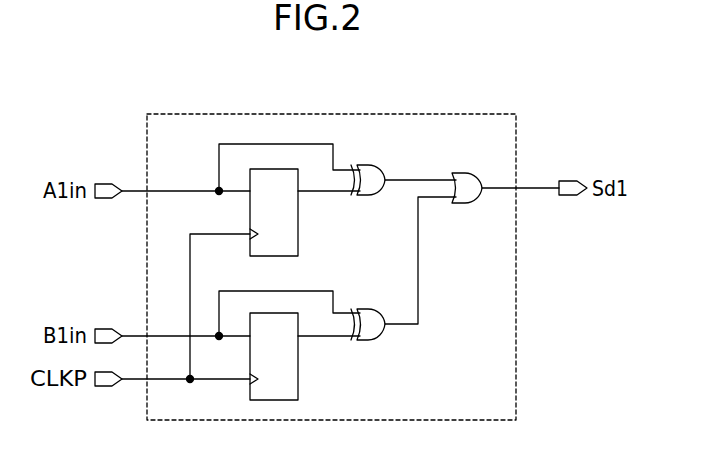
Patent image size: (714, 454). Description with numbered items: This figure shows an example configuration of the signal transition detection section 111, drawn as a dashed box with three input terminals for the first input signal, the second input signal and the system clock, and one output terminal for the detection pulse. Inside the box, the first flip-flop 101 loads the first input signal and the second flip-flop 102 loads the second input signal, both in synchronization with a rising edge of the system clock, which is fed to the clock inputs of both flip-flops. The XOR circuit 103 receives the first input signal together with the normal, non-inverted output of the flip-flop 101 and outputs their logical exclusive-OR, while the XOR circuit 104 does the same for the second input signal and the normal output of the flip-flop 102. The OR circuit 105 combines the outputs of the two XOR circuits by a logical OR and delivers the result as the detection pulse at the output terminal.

The signal transition detection section 111 is at (322, 114).
The flip-flop 101 is at (298, 238).
The flip-flop 102 is at (298, 391).
The XOR circuit 103 is at (383, 151).
The XOR circuit 104 is at (370, 339).
The OR circuit 105 is at (466, 172).